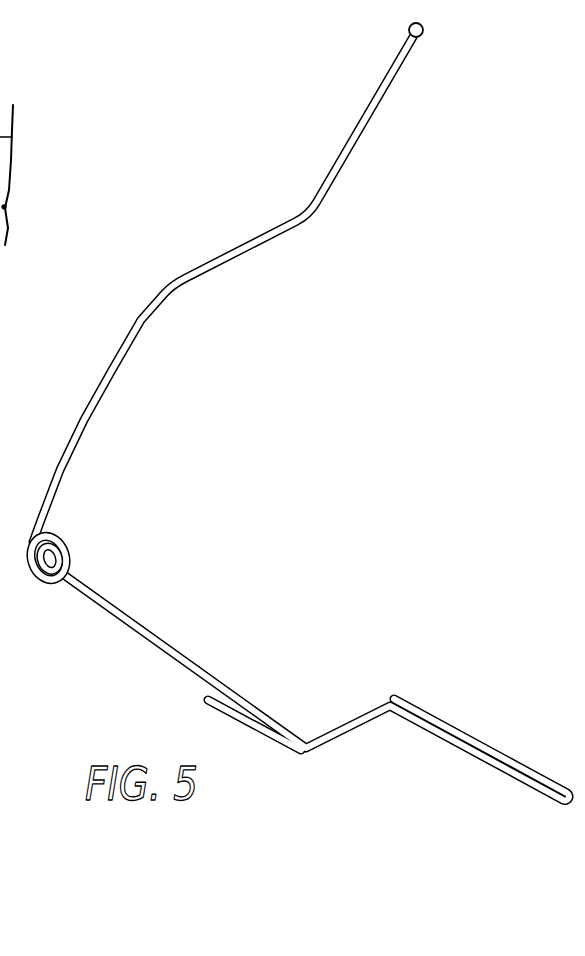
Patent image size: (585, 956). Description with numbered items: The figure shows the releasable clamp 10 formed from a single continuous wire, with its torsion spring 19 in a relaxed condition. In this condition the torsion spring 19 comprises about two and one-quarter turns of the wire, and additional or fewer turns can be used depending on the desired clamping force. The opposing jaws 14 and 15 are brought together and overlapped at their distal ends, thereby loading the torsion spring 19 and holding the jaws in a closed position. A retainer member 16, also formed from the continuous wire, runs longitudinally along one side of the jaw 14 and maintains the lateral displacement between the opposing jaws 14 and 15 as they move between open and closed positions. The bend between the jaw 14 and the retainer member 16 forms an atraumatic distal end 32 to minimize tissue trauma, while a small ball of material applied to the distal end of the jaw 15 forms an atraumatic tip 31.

The releasable clamp 10 is at (297, 444).
The jaw 14 is at (438, 712).
The jaw 15 is at (353, 150).
The retainer member 16 is at (440, 743).
The torsion spring 19 is at (62, 534).
The atraumatic tip 31 is at (424, 29).
The atraumatic distal end 32 is at (562, 808).